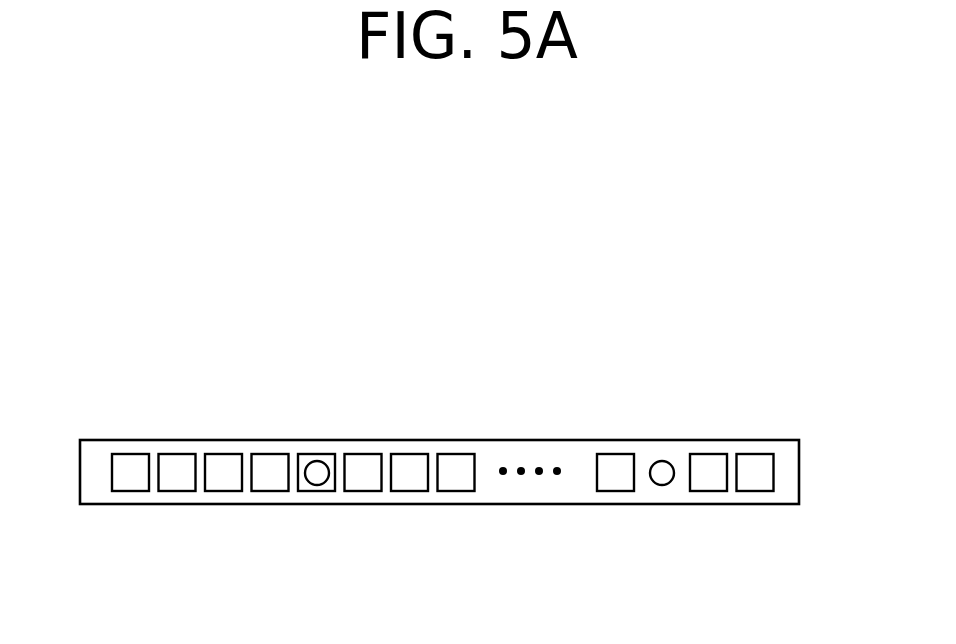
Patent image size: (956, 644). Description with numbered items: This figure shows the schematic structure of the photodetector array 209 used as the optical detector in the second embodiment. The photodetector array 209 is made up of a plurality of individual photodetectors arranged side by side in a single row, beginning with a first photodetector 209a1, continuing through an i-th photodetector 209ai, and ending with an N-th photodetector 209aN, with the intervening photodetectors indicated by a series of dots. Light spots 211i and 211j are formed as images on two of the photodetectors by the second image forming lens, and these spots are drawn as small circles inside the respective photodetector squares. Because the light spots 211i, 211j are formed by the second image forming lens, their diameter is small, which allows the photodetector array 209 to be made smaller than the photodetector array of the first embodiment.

The photodetector array 209 is at (418, 297).
The photodetector 209a1 is at (127, 453).
The photodetector 209ai is at (320, 453).
The photodetector 209aN is at (753, 453).
The light spot 211i is at (315, 492).
The light spot 211j is at (663, 492).